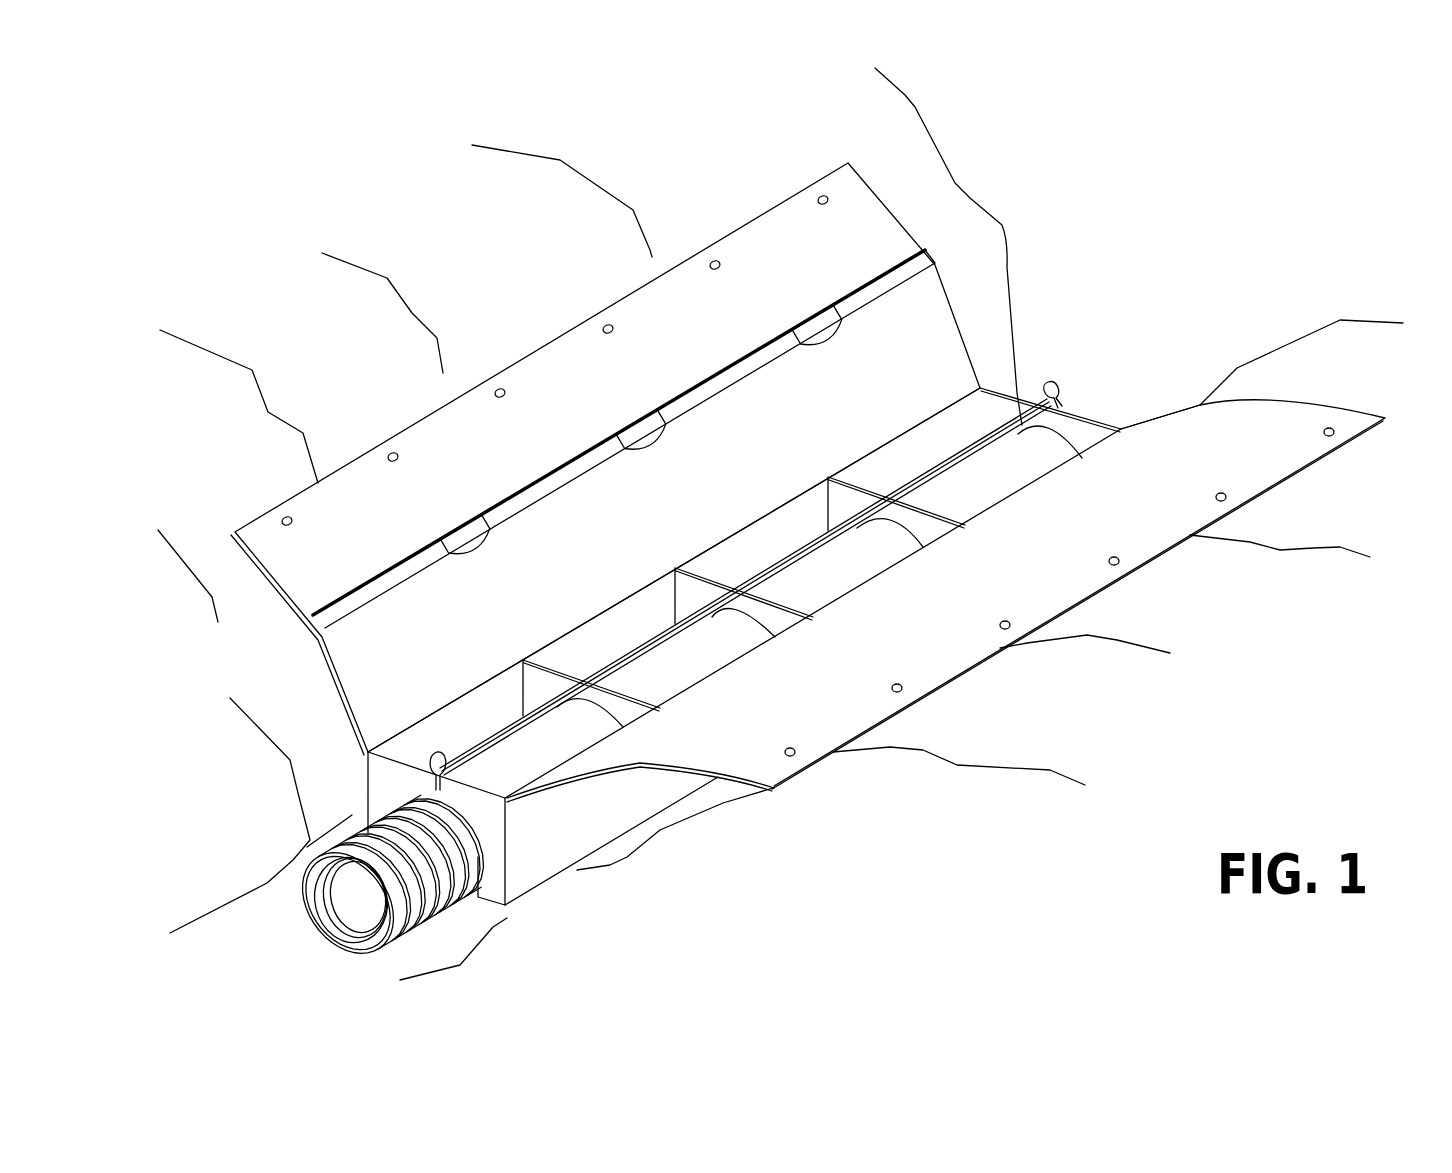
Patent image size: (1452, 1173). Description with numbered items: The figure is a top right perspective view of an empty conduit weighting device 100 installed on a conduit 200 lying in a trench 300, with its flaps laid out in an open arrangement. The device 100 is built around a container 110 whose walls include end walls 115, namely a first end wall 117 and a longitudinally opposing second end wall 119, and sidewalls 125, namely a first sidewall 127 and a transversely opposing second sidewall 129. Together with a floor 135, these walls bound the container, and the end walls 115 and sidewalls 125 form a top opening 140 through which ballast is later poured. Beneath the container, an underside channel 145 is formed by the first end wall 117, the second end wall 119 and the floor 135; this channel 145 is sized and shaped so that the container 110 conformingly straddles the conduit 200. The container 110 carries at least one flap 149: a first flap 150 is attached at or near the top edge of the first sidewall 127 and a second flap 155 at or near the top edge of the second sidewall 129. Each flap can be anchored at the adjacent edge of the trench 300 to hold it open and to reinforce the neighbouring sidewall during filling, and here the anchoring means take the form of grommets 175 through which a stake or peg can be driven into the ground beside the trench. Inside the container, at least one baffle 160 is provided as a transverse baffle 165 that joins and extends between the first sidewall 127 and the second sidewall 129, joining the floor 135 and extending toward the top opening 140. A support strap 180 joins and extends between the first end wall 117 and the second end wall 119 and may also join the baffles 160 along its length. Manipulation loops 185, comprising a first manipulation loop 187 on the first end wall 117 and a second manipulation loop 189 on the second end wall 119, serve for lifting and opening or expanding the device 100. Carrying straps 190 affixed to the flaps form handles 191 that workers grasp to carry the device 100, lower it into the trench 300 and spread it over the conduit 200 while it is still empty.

The conduit weighting device 100 is at (272, 458).
The container 110 is at (250, 773).
The end walls 115 is at (1117, 368).
The first end wall 117 is at (437, 773).
The second end wall 119 is at (1090, 425).
The sidewalls 125 is at (765, 443).
The first sidewall 127 is at (663, 790).
The second sidewall 129 is at (908, 465).
The floor 135 is at (623, 860).
The top opening 140 is at (603, 587).
The underside channel 145 is at (483, 857).
The flap 149 is at (946, 642).
The first flap 150 is at (825, 758).
The second flap 155 is at (545, 343).
The baffle 160 is at (819, 594).
The transverse baffle 165 is at (790, 600).
The grommet 175 is at (1118, 560).
The support strap 180 is at (933, 472).
The manipulation loops 185 is at (302, 705).
The first manipulation loop 187 is at (433, 753).
The second manipulation loop 189 is at (1052, 383).
The carrying strap 190 is at (888, 283).
The handle 191 is at (813, 330).
The conduit 200 is at (300, 908).
The trench 300 is at (1312, 298).